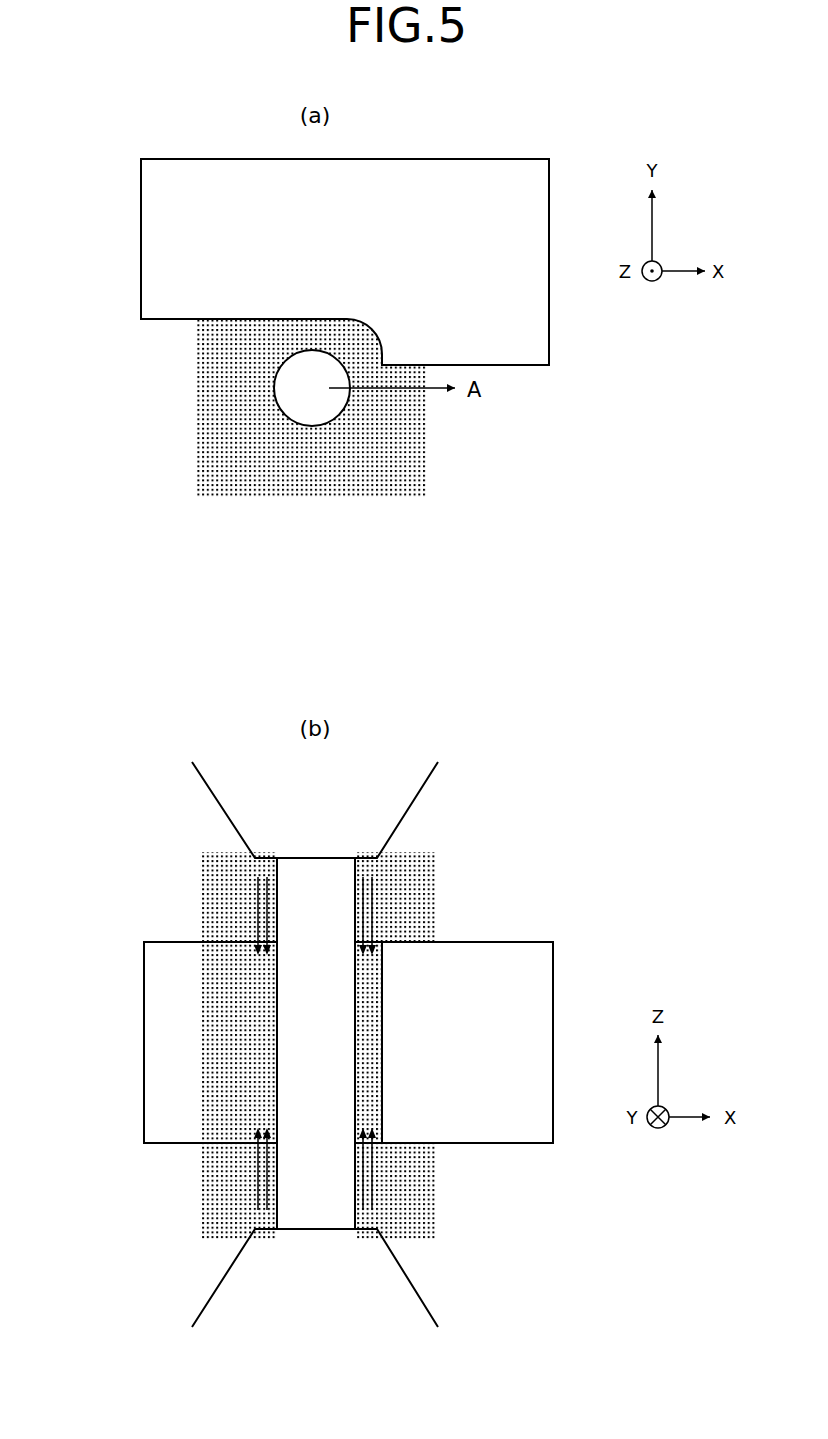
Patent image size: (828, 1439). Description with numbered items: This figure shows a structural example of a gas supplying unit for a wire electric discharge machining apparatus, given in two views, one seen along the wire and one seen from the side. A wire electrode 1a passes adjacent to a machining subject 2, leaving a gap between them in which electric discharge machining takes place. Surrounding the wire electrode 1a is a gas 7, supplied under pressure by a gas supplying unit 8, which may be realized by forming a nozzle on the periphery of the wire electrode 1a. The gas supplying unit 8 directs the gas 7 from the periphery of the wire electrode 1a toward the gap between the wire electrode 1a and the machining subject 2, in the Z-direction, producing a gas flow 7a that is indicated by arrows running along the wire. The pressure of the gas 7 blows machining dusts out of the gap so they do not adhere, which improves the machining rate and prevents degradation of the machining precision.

The wire electrode 1a is at (292, 407).
The machining subject 2 is at (468, 180).
The gas 7 is at (227, 358).
The gas flow 7a is at (373, 887).
The gas supplying unit 8 is at (372, 805).